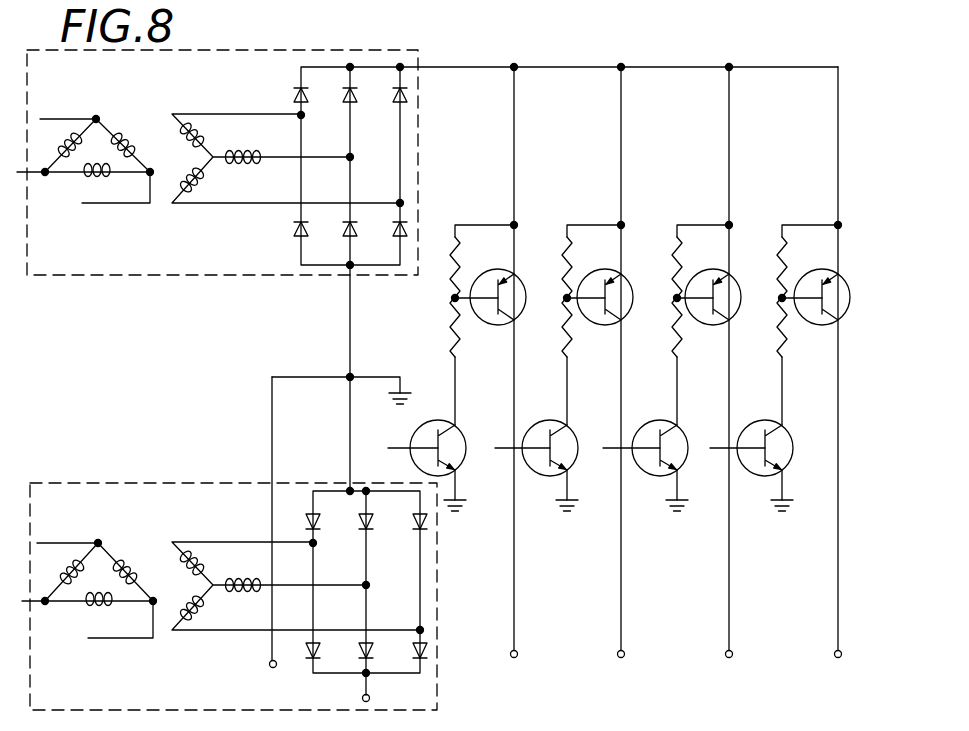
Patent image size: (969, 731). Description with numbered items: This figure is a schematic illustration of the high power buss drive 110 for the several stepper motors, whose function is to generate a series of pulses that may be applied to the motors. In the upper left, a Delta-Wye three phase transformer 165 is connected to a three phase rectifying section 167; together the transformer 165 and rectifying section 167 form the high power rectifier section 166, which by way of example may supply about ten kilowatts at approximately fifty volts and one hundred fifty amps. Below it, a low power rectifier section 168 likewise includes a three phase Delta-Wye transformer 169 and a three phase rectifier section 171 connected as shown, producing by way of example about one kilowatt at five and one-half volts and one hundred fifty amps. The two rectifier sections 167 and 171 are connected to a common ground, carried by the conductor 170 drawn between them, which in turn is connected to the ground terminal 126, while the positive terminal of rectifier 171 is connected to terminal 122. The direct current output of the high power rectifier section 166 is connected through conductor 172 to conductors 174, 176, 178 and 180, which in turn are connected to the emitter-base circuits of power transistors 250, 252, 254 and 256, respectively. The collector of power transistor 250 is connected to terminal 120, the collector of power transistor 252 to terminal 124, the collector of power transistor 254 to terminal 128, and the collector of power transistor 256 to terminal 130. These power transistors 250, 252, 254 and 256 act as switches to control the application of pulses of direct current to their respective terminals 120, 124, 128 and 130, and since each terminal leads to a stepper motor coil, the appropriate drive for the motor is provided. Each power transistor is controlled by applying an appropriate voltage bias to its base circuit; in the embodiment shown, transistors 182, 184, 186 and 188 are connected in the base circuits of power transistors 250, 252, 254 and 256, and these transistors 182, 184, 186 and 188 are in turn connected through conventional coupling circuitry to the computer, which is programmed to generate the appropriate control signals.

The high power buss drive 110 is at (641, 377).
The terminal 120 is at (518, 656).
The terminal 122 is at (372, 697).
The terminal 124 is at (625, 656).
The ground terminal 126 is at (270, 665).
The terminal 128 is at (732, 657).
The terminal 130 is at (836, 658).
The transformer 165 is at (155, 115).
The high power rectifier section 166 is at (217, 195).
The three phase rectifying section 167 is at (350, 166).
The low power rectifier section 168 is at (229, 543).
The three phase Delta-Wye transformer 169 is at (153, 543).
The conductor 170 is at (350, 340).
The three phase rectifier section 171 is at (366, 592).
The conductor 172 is at (565, 67).
The conductor 174 is at (514, 105).
The conductor 176 is at (621, 105).
The conductor 178 is at (729, 108).
The conductor 180 is at (836, 158).
The transistor 182 is at (462, 432).
The transistor 184 is at (528, 425).
The transistor 186 is at (668, 402).
The transistor 188 is at (755, 407).
The power transistor 250 is at (508, 278).
The power transistor 252 is at (615, 278).
The power transistor 254 is at (722, 278).
The power transistor 256 is at (844, 285).